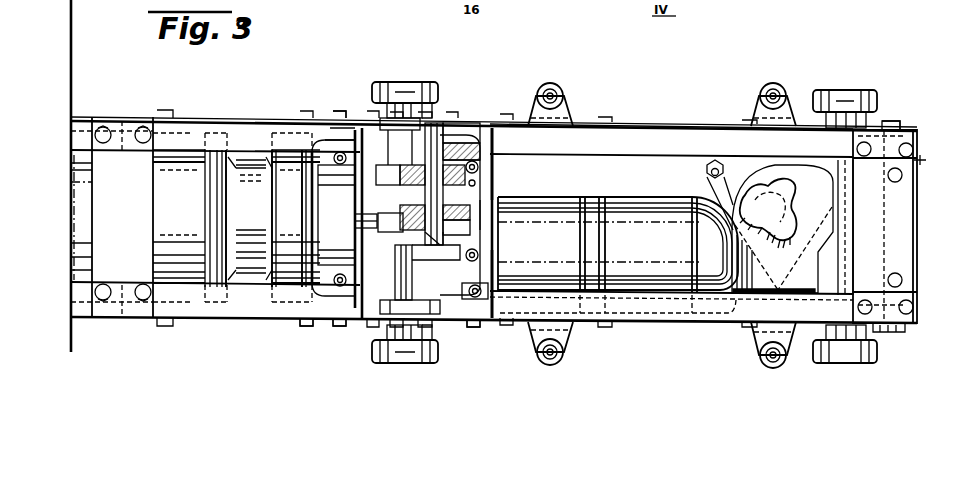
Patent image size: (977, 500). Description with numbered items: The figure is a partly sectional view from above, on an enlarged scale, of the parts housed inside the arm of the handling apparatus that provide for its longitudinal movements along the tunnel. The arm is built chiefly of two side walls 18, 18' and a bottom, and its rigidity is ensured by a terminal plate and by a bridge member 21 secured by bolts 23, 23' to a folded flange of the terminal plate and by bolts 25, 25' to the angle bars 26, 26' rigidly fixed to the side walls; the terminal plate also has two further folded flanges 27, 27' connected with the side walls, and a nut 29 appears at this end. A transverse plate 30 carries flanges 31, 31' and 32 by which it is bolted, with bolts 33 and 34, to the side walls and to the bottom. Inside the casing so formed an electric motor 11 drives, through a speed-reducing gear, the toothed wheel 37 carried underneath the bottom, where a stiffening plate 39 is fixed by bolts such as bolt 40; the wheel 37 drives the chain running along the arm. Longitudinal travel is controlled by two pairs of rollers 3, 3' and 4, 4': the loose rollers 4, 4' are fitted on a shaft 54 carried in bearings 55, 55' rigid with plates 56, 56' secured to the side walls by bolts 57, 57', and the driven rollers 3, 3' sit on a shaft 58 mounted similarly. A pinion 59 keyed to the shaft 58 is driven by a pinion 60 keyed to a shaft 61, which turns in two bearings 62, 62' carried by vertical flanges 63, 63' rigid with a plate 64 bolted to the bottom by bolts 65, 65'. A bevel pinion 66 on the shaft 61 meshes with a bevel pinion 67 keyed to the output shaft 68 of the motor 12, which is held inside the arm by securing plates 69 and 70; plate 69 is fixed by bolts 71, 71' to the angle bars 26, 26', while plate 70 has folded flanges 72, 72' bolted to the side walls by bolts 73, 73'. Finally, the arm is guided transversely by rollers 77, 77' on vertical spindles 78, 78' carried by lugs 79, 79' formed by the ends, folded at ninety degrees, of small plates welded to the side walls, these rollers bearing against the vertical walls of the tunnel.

The roller 3 is at (405, 364).
The roller 3' is at (410, 78).
The roller 4 is at (845, 351).
The roller 4' is at (845, 94).
The electric motor 11 is at (618, 244).
The motor 12 is at (236, 218).
The side wall 18 is at (520, 353).
The side wall 18' is at (479, 98).
The bridge member 21 is at (889, 226).
The bolt 23 is at (921, 272).
The bolt 23' is at (924, 174).
The bolt 25 is at (907, 300).
The bolt 25' is at (906, 108).
The angle bar 26 is at (671, 330).
The angle bar 26' is at (671, 98).
The folded flange 27 is at (908, 342).
The folded flange 27' is at (916, 101).
The nut 29 is at (880, 333).
The transverse plate 30 is at (504, 215).
The flange 31 is at (502, 319).
The flange 31' is at (513, 150).
The flange 32 is at (478, 275).
The bolt 33 is at (472, 320).
The bolt 34 is at (480, 284).
The toothed wheel 37 is at (800, 192).
The stiffening plate 39 is at (742, 170).
The bolt 40 is at (715, 160).
The shaft 54 is at (847, 365).
The bearing 55 is at (392, 344).
The bearing 55' is at (396, 109).
The plate 56 is at (433, 354).
The plate 56' is at (453, 86).
The bolt 57 is at (396, 355).
The bolt 57' is at (384, 86).
The shaft 58 is at (403, 272).
The pinion 59 is at (420, 175).
The pinion 60 is at (476, 181).
The shaft 61 is at (434, 184).
The bearing 62 is at (446, 256).
The bearing 62' is at (493, 107).
The vertical flange 63 is at (484, 227).
The vertical flange 63' is at (488, 121).
The plate 64 is at (440, 252).
The bolt 65 is at (426, 257).
The bolt 65' is at (408, 113).
The bevel pinion 66 is at (457, 210).
The bevel pinion 67 is at (367, 228).
The output shaft 68 is at (392, 222).
The securing plate 69 is at (122, 217).
The securing plate 70 is at (358, 190).
The bolt 71 is at (123, 316).
The bolt 71' is at (123, 116).
The folded flange 72 is at (275, 339).
The folded flange 72' is at (302, 97).
The bolt 73 is at (306, 339).
The bolt 73' is at (331, 86).
The roller 77 is at (661, 365).
The roller 77' is at (661, 81).
The vertical spindle 78 is at (663, 368).
The vertical spindle 78' is at (680, 80).
The lug 79 is at (662, 338).
The lug 79' is at (674, 102).